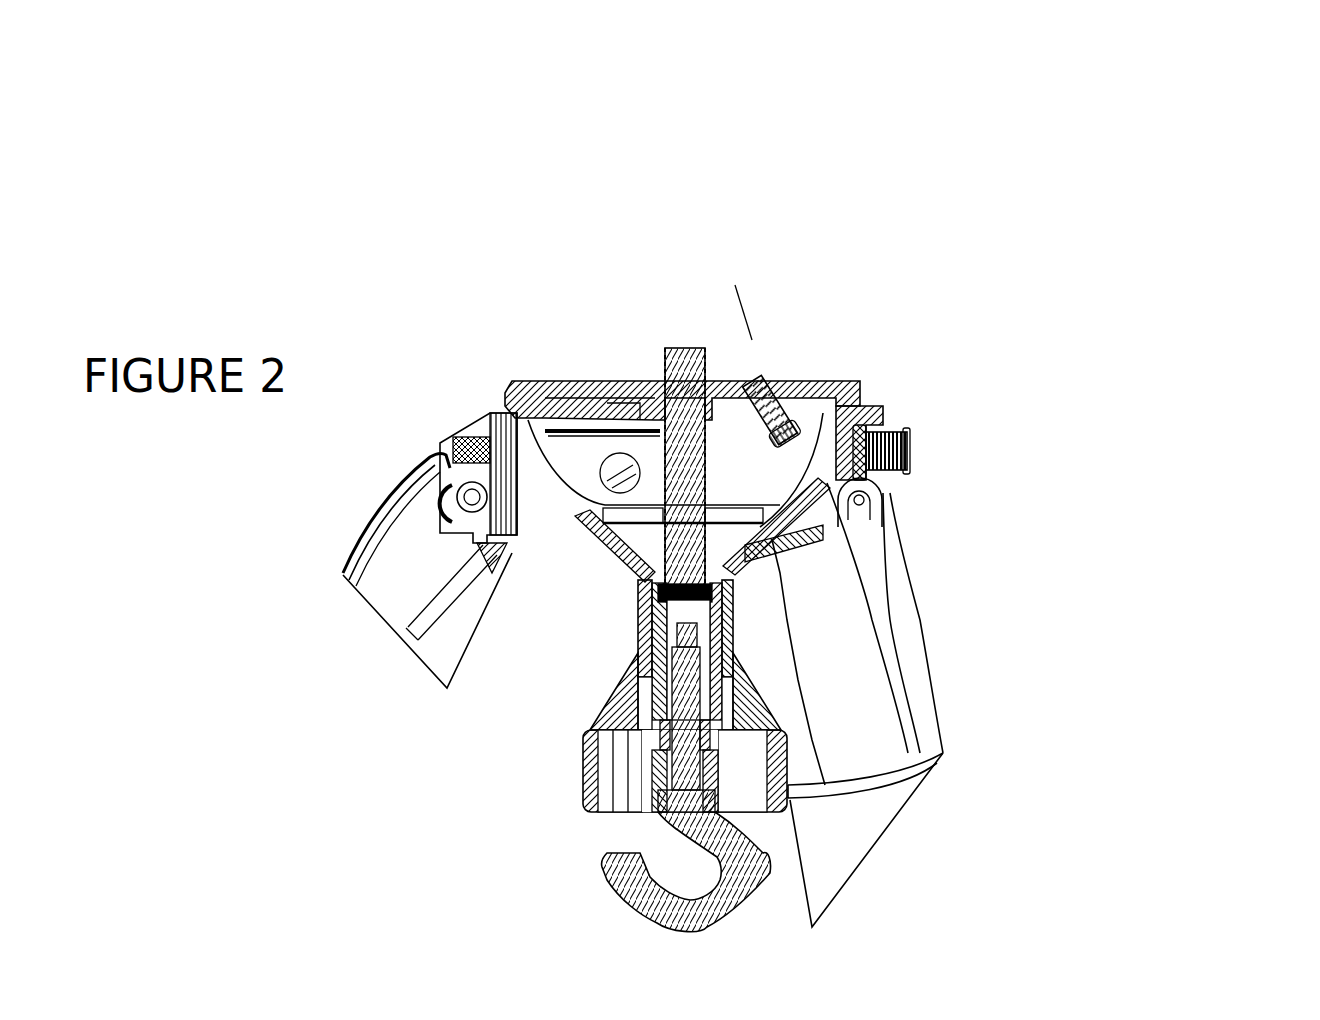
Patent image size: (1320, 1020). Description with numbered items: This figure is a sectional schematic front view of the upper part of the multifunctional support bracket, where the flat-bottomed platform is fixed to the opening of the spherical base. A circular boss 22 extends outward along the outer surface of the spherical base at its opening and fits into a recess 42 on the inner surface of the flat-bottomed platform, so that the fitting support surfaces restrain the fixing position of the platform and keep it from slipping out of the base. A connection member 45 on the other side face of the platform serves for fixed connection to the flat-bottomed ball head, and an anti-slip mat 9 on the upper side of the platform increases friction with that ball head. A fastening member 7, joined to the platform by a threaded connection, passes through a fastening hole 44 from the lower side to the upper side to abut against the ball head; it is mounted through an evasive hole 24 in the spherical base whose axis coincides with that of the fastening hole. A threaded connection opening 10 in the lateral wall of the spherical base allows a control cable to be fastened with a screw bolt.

The fastening member 7 is at (630, 385).
The anti-slip mat 9 is at (545, 382).
The threaded connection opening 10 is at (910, 456).
The boss 22 is at (857, 393).
The evasive hole 24 is at (628, 522).
The recess 42 is at (830, 400).
The fastening hole 44 is at (776, 383).
The connection member 45 is at (688, 364).